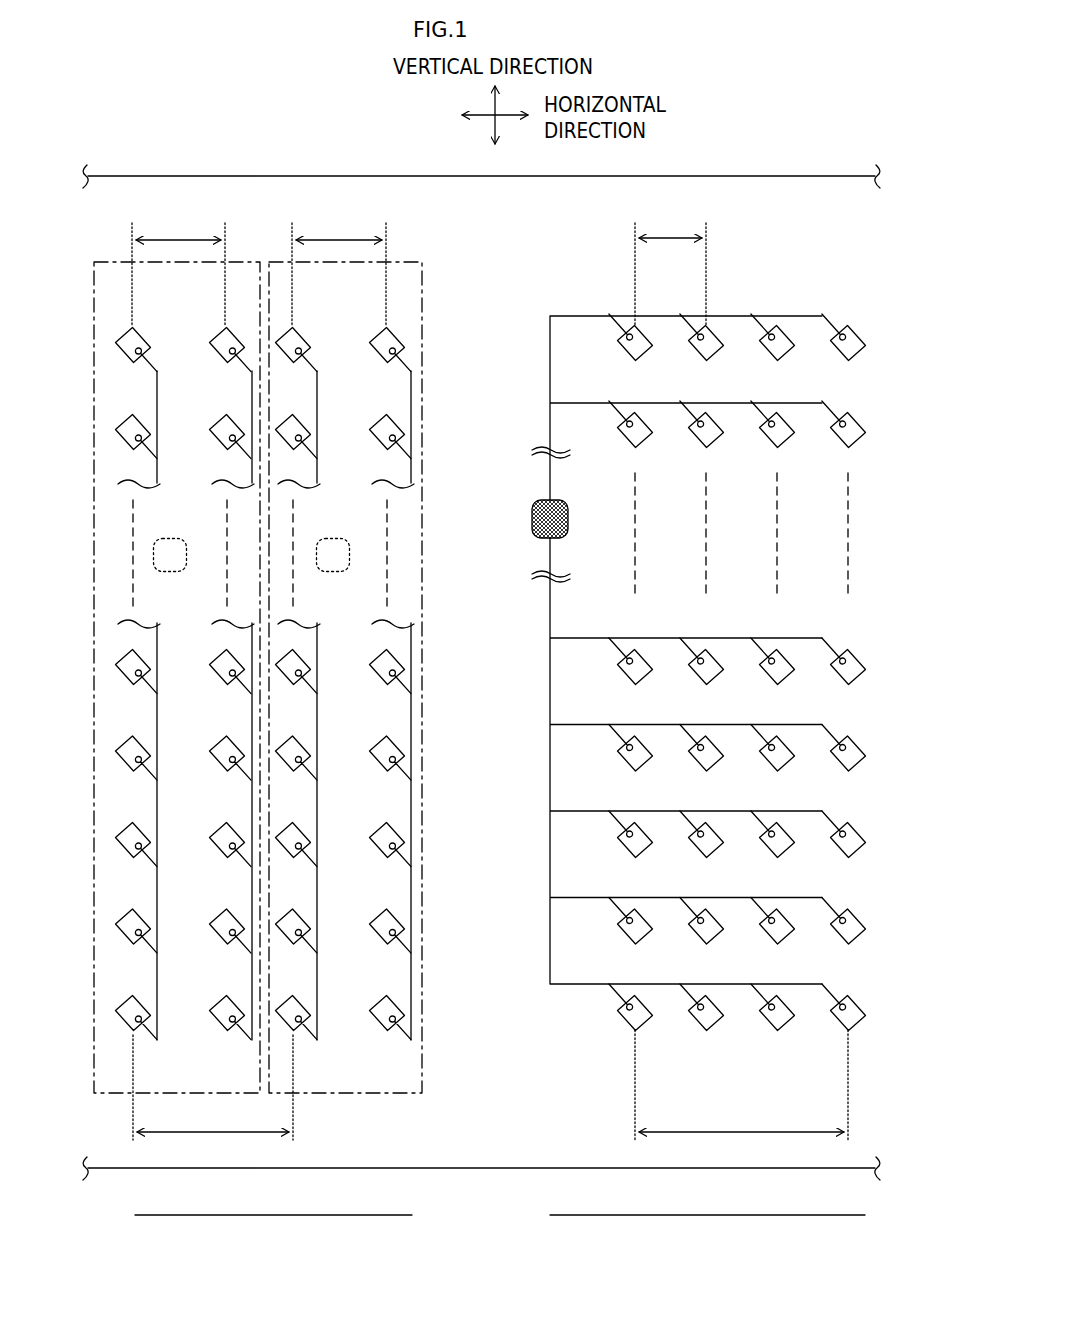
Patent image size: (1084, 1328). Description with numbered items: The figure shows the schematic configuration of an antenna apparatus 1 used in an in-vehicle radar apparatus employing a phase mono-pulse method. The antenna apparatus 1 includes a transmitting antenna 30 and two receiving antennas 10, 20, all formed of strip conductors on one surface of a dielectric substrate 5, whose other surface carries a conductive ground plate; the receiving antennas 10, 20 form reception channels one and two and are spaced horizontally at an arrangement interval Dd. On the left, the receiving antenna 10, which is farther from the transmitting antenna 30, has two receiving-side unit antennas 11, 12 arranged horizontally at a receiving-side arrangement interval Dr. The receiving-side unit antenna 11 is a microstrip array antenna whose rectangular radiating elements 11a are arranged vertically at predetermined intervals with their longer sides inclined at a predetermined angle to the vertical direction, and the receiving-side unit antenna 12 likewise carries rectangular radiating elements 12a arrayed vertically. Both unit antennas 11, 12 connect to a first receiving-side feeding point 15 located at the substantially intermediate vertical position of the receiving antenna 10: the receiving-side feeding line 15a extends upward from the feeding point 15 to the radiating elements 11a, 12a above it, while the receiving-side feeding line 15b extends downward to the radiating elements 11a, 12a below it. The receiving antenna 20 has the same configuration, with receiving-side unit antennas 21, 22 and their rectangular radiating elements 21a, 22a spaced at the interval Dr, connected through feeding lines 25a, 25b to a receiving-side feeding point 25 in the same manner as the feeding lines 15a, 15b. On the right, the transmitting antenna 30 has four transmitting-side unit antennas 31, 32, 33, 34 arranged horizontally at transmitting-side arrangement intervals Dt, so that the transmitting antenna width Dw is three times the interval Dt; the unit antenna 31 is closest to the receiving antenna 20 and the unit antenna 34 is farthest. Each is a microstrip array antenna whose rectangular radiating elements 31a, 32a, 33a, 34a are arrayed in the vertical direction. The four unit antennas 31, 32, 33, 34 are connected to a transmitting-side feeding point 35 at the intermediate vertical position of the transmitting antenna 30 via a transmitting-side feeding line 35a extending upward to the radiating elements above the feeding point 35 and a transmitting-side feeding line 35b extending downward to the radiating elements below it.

The antenna apparatus 1 is at (830, 143).
The dielectric substrate 5 is at (733, 175).
The receiving antenna 10 is at (112, 261).
The receiving-side unit antenna 11 is at (120, 317).
The rectangular radiating element 11a is at (124, 354).
The receiving-side unit antenna 12 is at (215, 317).
The rectangular radiating element 12a is at (214, 340).
The first receiving-side feeding point 15 is at (176, 538).
The receiving-side feeding line 15a is at (158, 417).
The receiving-side feeding line 15b is at (158, 801).
The receiving antenna 20 is at (412, 261).
The receiving-side unit antenna 21 is at (302, 317).
The rectangular radiating element 21a is at (304, 336).
The receiving-side unit antenna 22 is at (405, 317).
The rectangular radiating element 22a is at (372, 349).
The receiving-side feeding point 25 is at (339, 538).
The feeding line 25a is at (318, 417).
The feeding line 25b is at (318, 806).
The transmitting antenna 30 is at (800, 239).
The transmitting-side unit antenna 31 is at (647, 321).
The rectangular radiating element 31a is at (629, 352).
The transmitting-side unit antenna 32 is at (717, 321).
The rectangular radiating element 32a is at (700, 352).
The transmitting-side unit antenna 33 is at (789, 321).
The rectangular radiating element 33a is at (771, 352).
The transmitting-side unit antenna 34 is at (843, 319).
The rectangular radiating element 34a is at (842, 352).
The transmitting-side feeding point 35 is at (569, 522).
The transmitting-side feeding line 35a is at (550, 416).
The transmitting-side feeding line 35b is at (552, 555).